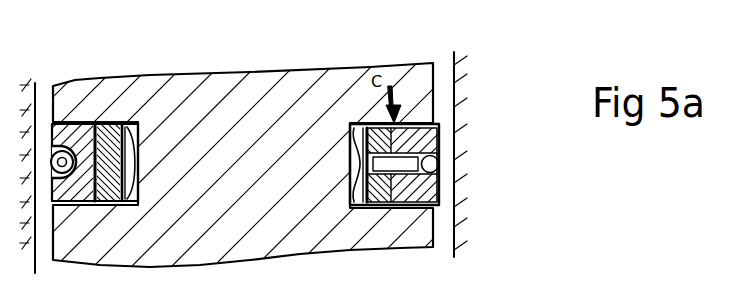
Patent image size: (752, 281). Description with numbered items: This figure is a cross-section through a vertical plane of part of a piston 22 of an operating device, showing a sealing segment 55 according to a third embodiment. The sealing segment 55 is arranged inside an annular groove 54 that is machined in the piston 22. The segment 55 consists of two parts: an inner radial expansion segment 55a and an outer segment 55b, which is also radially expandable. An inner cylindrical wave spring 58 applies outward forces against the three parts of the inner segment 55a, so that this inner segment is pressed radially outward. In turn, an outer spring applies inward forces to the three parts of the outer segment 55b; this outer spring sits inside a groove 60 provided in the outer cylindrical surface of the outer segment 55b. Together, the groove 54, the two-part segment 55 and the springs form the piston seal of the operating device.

The piston 22 is at (195, 112).
The annular groove 54 is at (400, 123).
The sealing segment 55 is at (402, 125).
The inner radial expansion segment 55a is at (397, 202).
The outer segment 55b is at (424, 188).
The inner cylindrical wave spring 58 is at (135, 148).
The groove 60 is at (64, 147).